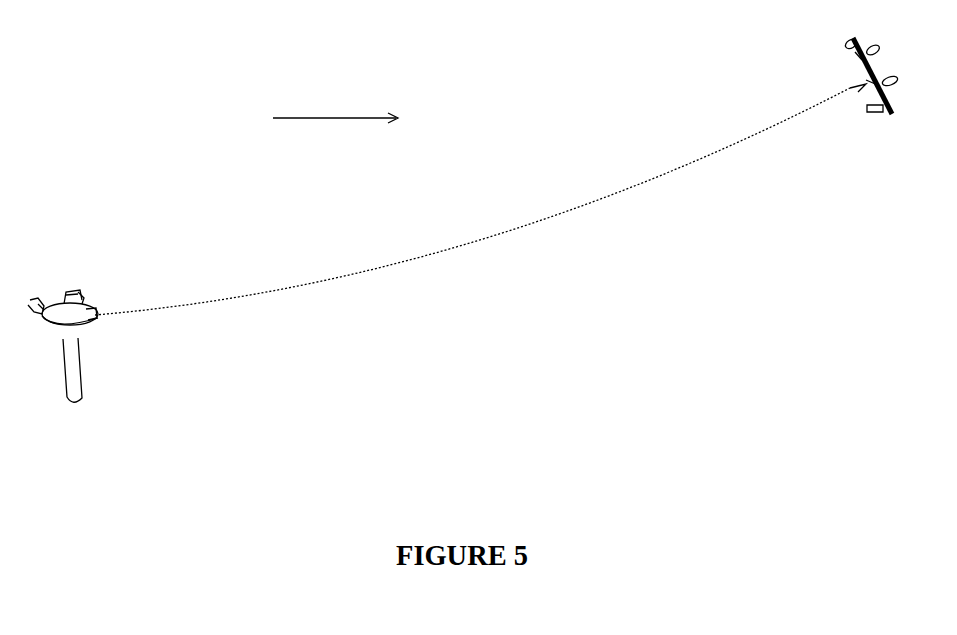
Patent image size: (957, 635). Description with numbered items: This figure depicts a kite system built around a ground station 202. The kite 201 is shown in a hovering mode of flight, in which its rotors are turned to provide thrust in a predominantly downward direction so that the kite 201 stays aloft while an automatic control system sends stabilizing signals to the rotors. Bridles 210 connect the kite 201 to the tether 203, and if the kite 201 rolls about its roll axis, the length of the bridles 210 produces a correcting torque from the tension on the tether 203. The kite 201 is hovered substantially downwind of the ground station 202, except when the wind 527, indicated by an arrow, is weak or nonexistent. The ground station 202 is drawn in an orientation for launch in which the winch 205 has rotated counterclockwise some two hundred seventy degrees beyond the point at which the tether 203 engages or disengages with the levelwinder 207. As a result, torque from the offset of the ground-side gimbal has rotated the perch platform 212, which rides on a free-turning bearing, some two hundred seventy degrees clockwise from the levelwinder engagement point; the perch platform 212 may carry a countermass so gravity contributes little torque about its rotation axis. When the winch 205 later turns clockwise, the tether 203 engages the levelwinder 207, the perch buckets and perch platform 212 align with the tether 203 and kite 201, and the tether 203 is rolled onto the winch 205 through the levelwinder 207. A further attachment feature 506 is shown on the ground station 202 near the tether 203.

The kite 201 is at (858, 92).
The ground station 202 is at (82, 343).
The tether 203 is at (537, 238).
The winch 205 is at (40, 322).
The levelwinder 207 is at (67, 301).
The bridles 210 is at (850, 70).
The perch platform 212 is at (83, 299).
The tether attachment ring 506 is at (93, 312).
The wind 527 is at (335, 108).